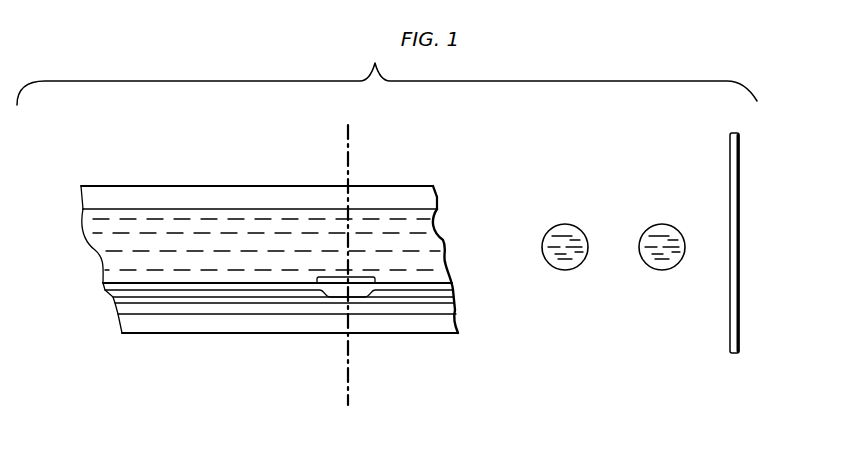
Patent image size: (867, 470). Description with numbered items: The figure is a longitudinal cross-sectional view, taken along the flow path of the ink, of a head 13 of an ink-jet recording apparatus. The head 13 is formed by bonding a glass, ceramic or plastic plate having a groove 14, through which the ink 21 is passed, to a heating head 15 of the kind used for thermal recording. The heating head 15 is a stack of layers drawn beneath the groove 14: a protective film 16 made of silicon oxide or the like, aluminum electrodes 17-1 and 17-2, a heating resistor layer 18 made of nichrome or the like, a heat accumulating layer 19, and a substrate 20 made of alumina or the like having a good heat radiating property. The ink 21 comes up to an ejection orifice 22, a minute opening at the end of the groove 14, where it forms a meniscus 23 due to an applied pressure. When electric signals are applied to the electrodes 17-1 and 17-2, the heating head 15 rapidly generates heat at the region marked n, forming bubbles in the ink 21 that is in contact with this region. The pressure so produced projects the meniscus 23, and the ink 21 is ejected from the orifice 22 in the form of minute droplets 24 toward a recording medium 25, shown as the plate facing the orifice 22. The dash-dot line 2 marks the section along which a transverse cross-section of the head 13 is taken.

The line 2— 2 is at (348, 264).
The head 13 is at (203, 186).
The groove 14 is at (262, 209).
The ink 21 is at (122, 217).
The region n is at (337, 277).
The meniscus 23 is at (447, 240).
The ejection orifice 22 is at (457, 263).
The heating head 15 is at (83, 280).
The protective film 16 is at (143, 290).
The aluminum electrode 17-1 is at (195, 297).
The aluminum electrode 17-2 is at (442, 295).
The heating resistor layer 18 is at (267, 303).
The heat accumulating layer 19 is at (310, 310).
The substrate 20 is at (395, 325).
The minute droplets 24 is at (687, 220).
The recording medium 25 is at (728, 193).